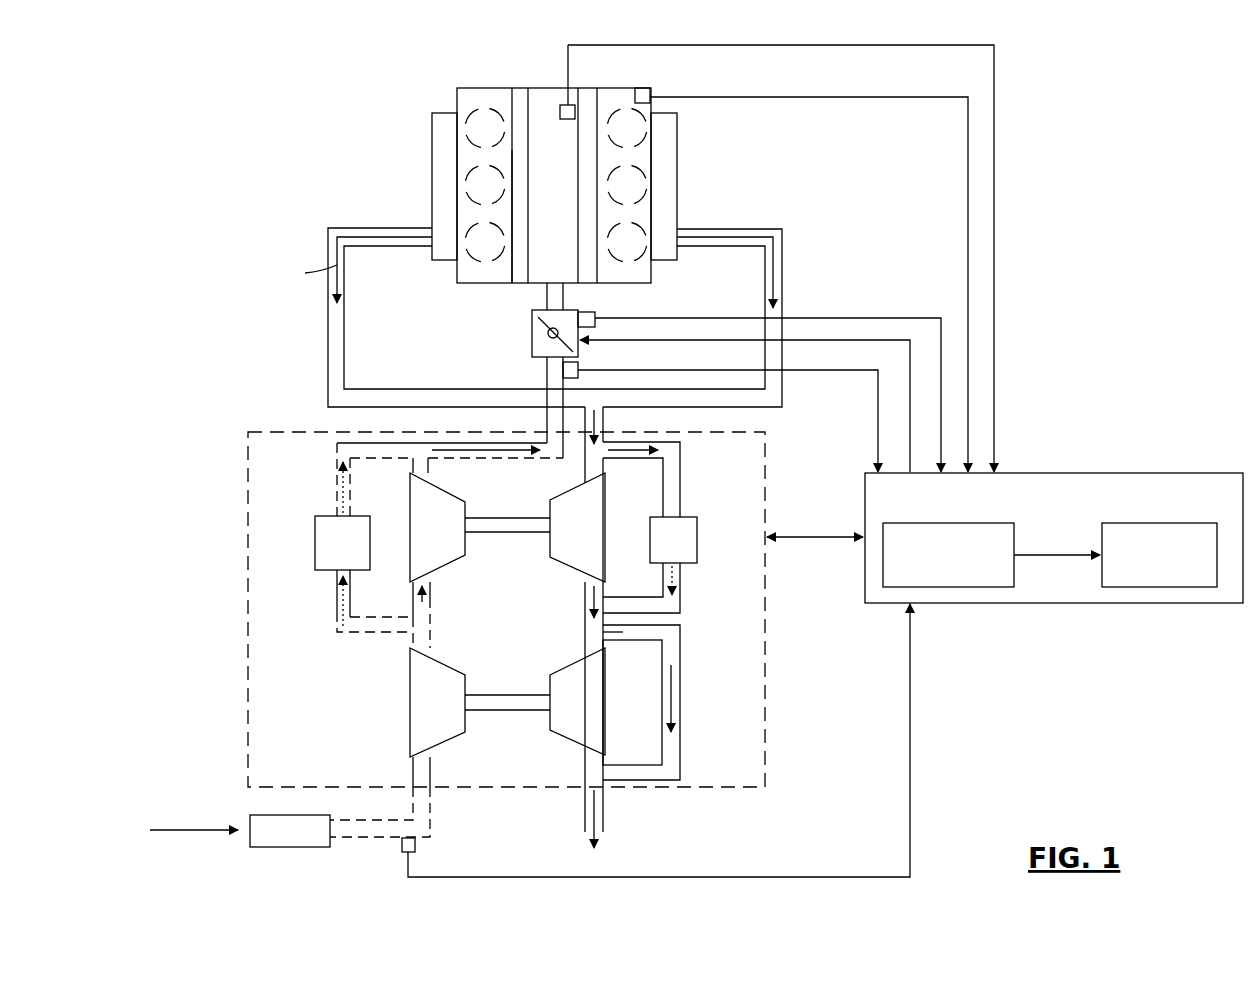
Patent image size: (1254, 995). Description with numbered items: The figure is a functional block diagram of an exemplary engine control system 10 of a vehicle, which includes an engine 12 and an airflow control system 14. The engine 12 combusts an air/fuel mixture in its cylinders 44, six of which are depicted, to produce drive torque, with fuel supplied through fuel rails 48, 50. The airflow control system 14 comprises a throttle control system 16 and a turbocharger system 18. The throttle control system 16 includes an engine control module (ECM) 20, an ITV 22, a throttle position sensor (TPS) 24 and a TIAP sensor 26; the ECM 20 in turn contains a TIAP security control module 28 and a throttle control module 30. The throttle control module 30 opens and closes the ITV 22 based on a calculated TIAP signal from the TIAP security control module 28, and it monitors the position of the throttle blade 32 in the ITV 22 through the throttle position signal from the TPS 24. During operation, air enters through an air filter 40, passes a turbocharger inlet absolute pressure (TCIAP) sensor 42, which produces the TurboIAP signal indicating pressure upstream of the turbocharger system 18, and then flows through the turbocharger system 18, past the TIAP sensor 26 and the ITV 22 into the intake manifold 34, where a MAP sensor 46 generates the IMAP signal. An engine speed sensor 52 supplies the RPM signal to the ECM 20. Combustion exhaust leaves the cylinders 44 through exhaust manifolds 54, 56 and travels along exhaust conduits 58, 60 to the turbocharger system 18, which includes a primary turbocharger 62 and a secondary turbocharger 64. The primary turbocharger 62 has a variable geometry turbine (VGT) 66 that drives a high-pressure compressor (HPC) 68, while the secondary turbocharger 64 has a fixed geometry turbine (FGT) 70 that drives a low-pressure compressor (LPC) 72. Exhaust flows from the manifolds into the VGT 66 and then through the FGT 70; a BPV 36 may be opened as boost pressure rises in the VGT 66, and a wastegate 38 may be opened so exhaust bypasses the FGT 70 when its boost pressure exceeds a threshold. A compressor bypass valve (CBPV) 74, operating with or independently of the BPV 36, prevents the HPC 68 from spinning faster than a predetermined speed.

The engine control system 10 is at (288, 110).
The engine 12 is at (485, 88).
The airflow control system 14 is at (1012, 303).
The throttle control system 16 is at (446, 312).
The turbocharger system 18 is at (765, 667).
The engine control module (ECM) 20 is at (1055, 473).
The ITV 22 is at (532, 330).
The throttle position sensor (TPS) 24 is at (590, 312).
The TIAP sensor 26 is at (580, 362).
The TIAP security control module 28 is at (956, 523).
The throttle control module 30 is at (1165, 523).
The throttle blade 32 is at (548, 340).
The intake manifold 34 is at (548, 97).
The BPV 36 is at (697, 561).
The wastegate 38 is at (623, 632).
The air filter 40 is at (285, 847).
The turbocharger inlet absolute pressure (TCIAP) sensor 42 is at (415, 845).
The cylinders 44 is at (641, 258).
The intake manifold absolute pressure (MAP) sensor 46 is at (568, 119).
The fuel rail 48 is at (520, 207).
The fuel rail 50 is at (586, 237).
The engine speed sensor 52 is at (636, 93).
The exhaust manifold 54 is at (432, 190).
The exhaust manifold 56 is at (677, 186).
The exhaust conduit 58 is at (328, 228).
The exhaust conduit 60 is at (782, 229).
The primary turbocharger 62 is at (489, 558).
The secondary turbocharger 64 is at (488, 666).
The variable geometry turbine (VGT) 66 is at (550, 500).
The high-pressure compressor (HPC) 68 is at (412, 510).
The fixed geometry turbine (FGT) 70 is at (566, 741).
The low-pressure compressor (LPC) 72 is at (410, 710).
The compressor bypass valve (CBPV) 74 is at (325, 516).